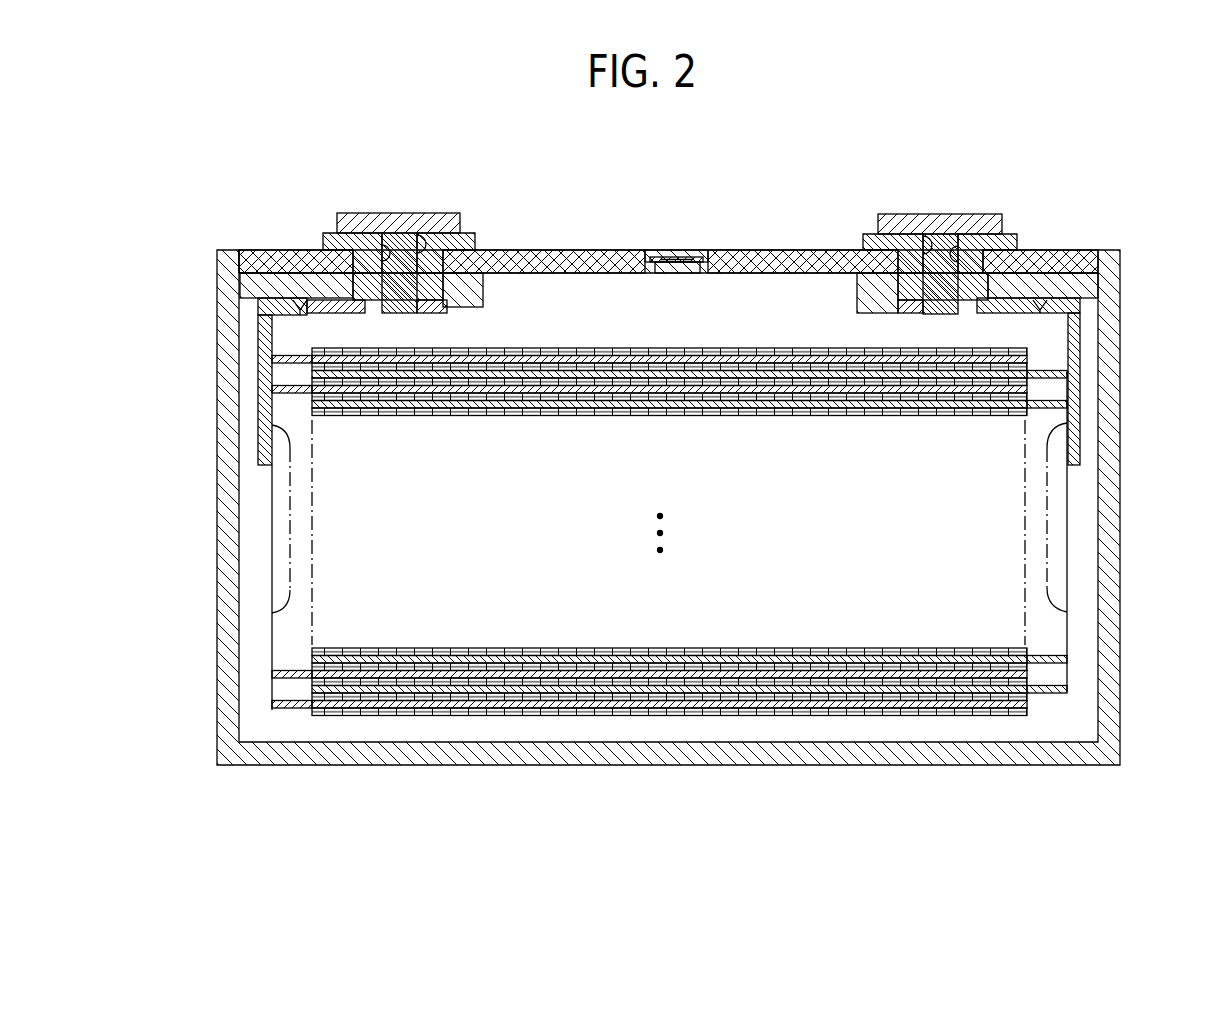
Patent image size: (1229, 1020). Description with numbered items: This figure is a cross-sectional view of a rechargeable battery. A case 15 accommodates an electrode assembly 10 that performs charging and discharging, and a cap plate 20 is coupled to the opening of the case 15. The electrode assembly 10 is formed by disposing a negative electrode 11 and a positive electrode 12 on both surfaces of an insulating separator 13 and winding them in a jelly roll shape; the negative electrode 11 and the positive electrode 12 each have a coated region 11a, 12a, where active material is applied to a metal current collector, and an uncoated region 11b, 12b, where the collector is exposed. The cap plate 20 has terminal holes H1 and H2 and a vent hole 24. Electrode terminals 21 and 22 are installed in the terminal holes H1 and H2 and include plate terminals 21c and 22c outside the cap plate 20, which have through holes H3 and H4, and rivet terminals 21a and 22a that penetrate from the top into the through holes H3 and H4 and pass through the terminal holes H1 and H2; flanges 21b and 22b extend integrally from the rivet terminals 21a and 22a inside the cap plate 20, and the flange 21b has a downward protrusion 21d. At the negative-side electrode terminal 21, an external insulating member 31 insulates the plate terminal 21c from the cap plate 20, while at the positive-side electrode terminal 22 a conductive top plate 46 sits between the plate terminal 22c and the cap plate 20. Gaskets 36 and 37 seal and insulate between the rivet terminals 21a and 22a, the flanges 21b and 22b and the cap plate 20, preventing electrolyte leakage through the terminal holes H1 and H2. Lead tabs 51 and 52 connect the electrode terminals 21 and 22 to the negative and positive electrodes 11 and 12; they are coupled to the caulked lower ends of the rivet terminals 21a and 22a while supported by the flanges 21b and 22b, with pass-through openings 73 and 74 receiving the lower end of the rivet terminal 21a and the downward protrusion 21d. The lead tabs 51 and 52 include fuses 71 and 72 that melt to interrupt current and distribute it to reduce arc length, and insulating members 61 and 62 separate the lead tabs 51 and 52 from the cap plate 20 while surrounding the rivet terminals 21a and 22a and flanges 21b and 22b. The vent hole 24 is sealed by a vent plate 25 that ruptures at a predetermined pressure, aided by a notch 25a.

The electrode assembly 10 is at (670, 609).
The negative electrode 11 is at (646, 613).
The coated region 11a is at (407, 703).
The uncoated region 11b is at (288, 590).
The positive electrode 12 is at (693, 617).
The coated region 12a is at (917, 690).
The uncoated region 12b is at (1049, 594).
The separator 13 is at (650, 712).
The case 15 is at (1105, 443).
The cap plate 20 is at (587, 250).
The electrode terminal 21 is at (401, 200).
The rivet terminal 21a is at (400, 315).
The flange 21b is at (473, 278).
The plate terminal 21c is at (357, 222).
The downward protrusion 21d is at (365, 315).
The electrode terminal 22 is at (939, 200).
The rivet terminal 22a is at (940, 292).
The flange 22b is at (895, 292).
The plate terminal 22c is at (980, 227).
The vent hole 24 is at (675, 273).
The vent plate 25 is at (705, 256).
The notch 25a is at (672, 258).
The external insulating member 31 is at (463, 233).
The gasket 36 is at (340, 250).
The gasket 37 is at (967, 243).
The conductive top plate 46 is at (870, 240).
The lead tab 51 is at (266, 340).
The lead tab 52 is at (1080, 337).
The insulating member 61 is at (240, 257).
The insulating member 62 is at (1080, 287).
The fuse 71 is at (292, 289).
The fuse 72 is at (1040, 303).
The pass-through opening 73 is at (407, 317).
The pass-through opening 74 is at (252, 280).
The terminal hole H1 is at (410, 243).
The terminal hole H2 is at (921, 240).
The through hole H3 is at (392, 225).
The through hole H4 is at (950, 222).